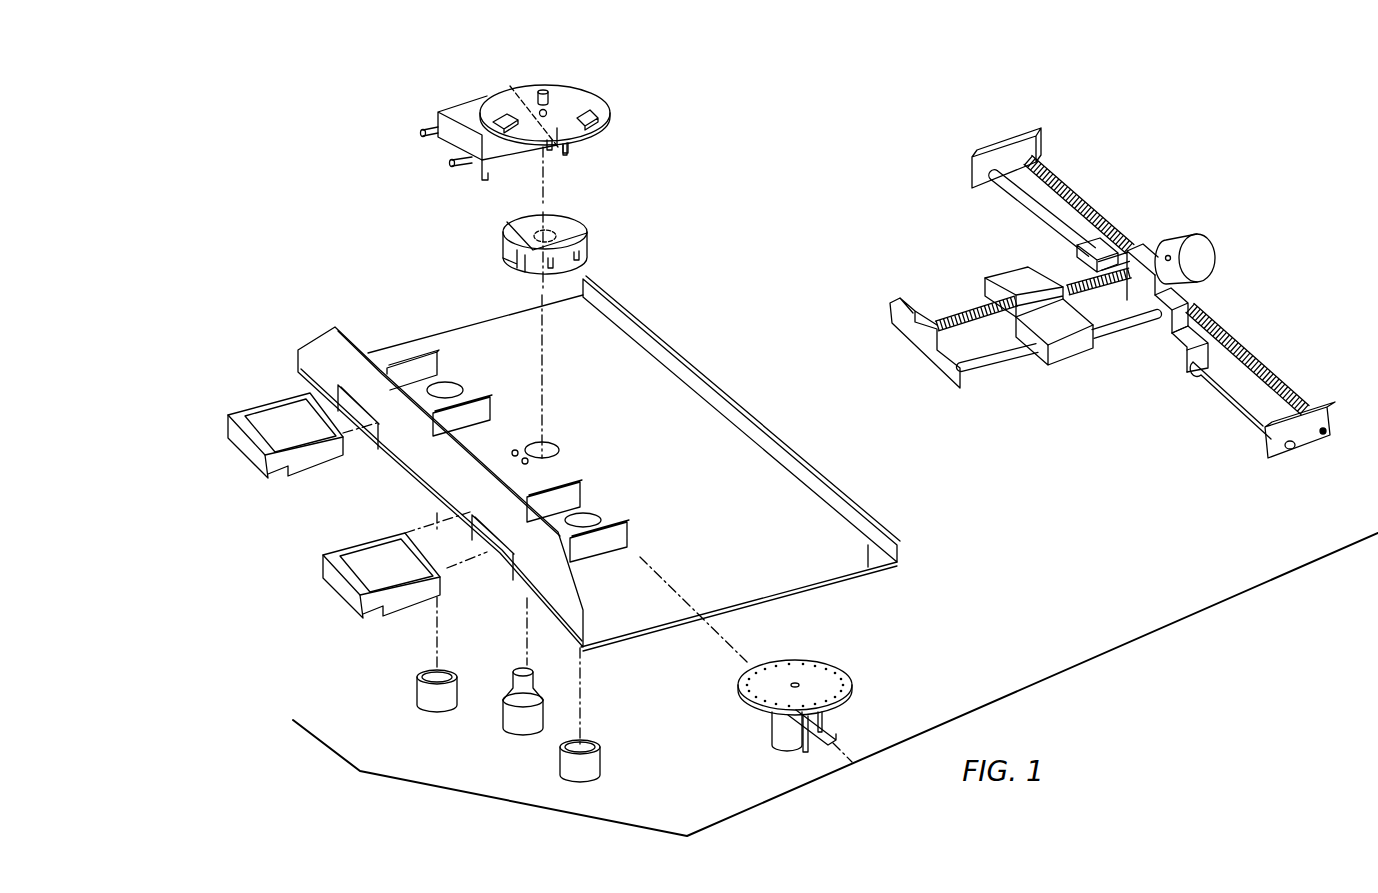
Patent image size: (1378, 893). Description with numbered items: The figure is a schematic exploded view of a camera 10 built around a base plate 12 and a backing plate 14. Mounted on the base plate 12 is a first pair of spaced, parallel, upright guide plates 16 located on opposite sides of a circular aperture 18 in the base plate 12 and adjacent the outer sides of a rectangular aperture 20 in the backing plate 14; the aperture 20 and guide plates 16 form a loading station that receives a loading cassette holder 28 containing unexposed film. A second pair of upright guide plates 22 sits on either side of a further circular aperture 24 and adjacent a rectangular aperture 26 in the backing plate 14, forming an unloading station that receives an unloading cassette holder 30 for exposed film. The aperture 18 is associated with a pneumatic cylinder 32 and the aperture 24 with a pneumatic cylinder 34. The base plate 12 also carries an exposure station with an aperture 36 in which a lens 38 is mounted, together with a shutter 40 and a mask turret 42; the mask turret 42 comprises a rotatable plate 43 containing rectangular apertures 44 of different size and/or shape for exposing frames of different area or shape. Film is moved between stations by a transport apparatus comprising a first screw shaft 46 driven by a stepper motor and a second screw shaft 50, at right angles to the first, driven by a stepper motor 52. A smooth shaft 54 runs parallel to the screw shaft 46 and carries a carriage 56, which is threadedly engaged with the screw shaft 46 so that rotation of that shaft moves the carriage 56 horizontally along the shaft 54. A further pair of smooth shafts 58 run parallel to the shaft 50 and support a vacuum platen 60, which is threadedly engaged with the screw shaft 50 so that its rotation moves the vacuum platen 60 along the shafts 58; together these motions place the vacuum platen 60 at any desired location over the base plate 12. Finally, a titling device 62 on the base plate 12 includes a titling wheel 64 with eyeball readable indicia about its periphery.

The camera 10 is at (315, 342).
The base plate 12 is at (458, 335).
The backing plate 14 is at (533, 567).
The first pair of guide plates 16 is at (627, 533).
The circular aperture 18 is at (588, 520).
The rectangular aperture 20 is at (502, 557).
The second pair of guide plates 22 is at (487, 398).
The further circular aperture 24 is at (458, 387).
The rectangular aperture 26 is at (363, 423).
The loading cassette holder 28 is at (405, 597).
The unloading cassette holder 30 is at (305, 453).
The pneumatic cylinder 32 is at (562, 762).
The pneumatic cylinder 34 is at (430, 697).
The aperture 36 is at (555, 447).
The lens 38 is at (528, 710).
The shutter 40 is at (582, 238).
The mask turret 42 is at (572, 130).
The rotatable plate 43 is at (507, 105).
The rectangular apertures 44 is at (580, 122).
The first screw shaft 46 is at (1262, 373).
The second shaft 50 is at (960, 303).
The stepper motor 52 is at (1215, 253).
The smooth shaft 54 is at (1215, 370).
The carriage 56 is at (1157, 330).
The smooth shafts 58 is at (1072, 272).
The vacuum platen 60 is at (1013, 277).
The titling device 62 is at (770, 732).
The titling wheel 64 is at (805, 665).